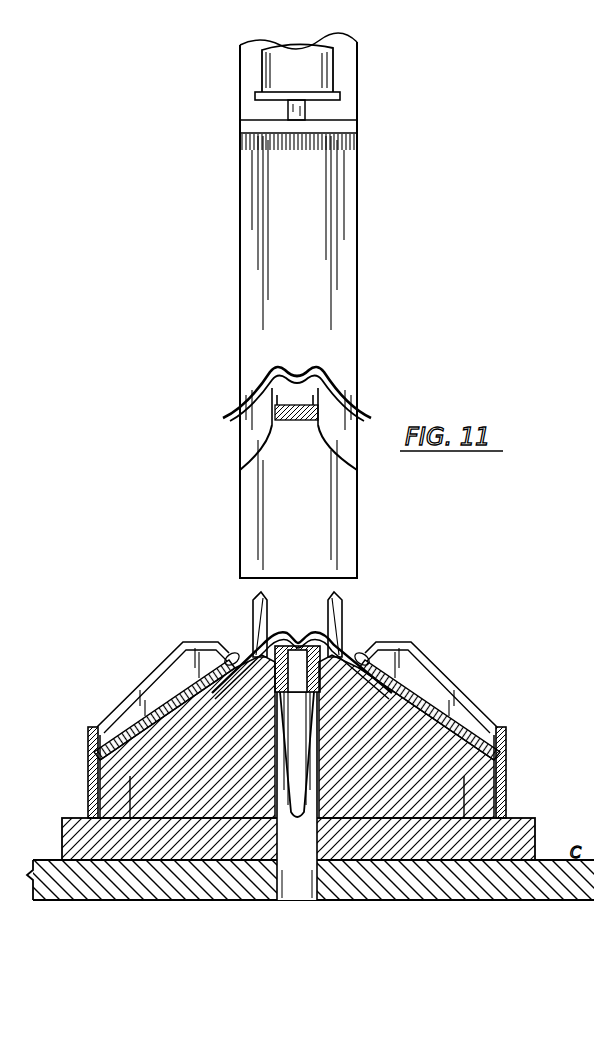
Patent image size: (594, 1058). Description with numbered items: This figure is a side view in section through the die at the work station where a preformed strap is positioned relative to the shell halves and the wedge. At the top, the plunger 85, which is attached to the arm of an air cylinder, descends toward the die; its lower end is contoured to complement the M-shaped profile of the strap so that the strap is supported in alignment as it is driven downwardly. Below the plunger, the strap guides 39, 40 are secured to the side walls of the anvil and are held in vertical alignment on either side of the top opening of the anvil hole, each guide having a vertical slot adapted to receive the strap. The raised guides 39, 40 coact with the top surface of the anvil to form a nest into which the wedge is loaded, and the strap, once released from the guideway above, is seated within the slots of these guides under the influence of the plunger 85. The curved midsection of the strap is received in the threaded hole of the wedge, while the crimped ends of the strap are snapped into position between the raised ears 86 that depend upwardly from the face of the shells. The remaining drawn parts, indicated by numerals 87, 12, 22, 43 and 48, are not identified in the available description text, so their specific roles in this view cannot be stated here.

The plunger 85 is at (275, 235).
The plug 87 is at (285, 78).
The housing 12 is at (512, 768).
The toothed band 22 is at (128, 742).
The raised ears 86 is at (230, 660).
The strap guide 39 is at (252, 617).
The strap guide 40 is at (345, 610).
The spring strip 43 is at (293, 607).
The pin 48 is at (298, 730).